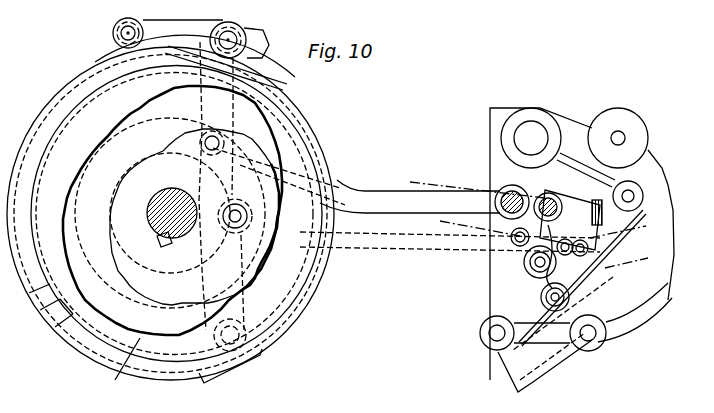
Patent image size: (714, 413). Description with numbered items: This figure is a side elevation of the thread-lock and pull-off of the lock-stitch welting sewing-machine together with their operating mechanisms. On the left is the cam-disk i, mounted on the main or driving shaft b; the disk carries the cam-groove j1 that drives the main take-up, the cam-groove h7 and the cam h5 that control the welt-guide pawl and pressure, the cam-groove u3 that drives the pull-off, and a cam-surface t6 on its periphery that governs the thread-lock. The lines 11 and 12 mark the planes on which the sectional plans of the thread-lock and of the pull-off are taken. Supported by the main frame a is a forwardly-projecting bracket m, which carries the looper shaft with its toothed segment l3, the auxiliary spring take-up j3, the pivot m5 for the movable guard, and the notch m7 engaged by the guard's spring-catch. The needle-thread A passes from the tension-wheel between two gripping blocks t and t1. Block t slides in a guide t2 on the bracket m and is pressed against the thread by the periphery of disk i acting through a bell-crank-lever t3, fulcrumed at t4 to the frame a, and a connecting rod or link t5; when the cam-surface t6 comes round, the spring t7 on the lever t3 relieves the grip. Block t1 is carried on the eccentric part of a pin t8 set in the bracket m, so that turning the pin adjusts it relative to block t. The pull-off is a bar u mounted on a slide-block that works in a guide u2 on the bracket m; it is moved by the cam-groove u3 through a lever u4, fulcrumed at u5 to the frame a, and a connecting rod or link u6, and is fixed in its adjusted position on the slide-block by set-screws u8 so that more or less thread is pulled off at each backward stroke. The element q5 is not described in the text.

The cam-surface t6 is at (78, 84).
The spring t7 is at (176, 214).
The cam-disk i is at (162, 378).
The cam-groove j1 is at (118, 371).
The rim notch q5 is at (53, 320).
The cam h5 is at (313, 137).
The cam-groove h7 is at (300, 305).
The main or driving shaft b is at (180, 240).
The cam-groove u3 is at (149, 240).
The lever u4 is at (243, 272).
The fulcrum u5 is at (242, 366).
The main frame a is at (283, 358).
The fulcrum t4 is at (246, 43).
The bell-crank-lever t3 is at (608, 175).
The connecting rod or link t5 is at (362, 193).
The connecting rod or link u6 is at (392, 248).
The guide u2 is at (472, 247).
The section line 11 11 is at (537, 200).
The section line 12 12 is at (547, 238).
The forwardly-projecting bracket m is at (490, 127).
The pivot m5 is at (534, 190).
The pin t8 is at (531, 138).
The guide t2 is at (627, 182).
The needle-thread A is at (567, 205).
The block t1 is at (562, 212).
The block t is at (595, 196).
The set-screws u8 is at (592, 237).
The auxiliary spring take-up j3 is at (545, 285).
The toothed segment l3 is at (559, 287).
The bar or block u is at (598, 265).
The notch m7 is at (627, 318).